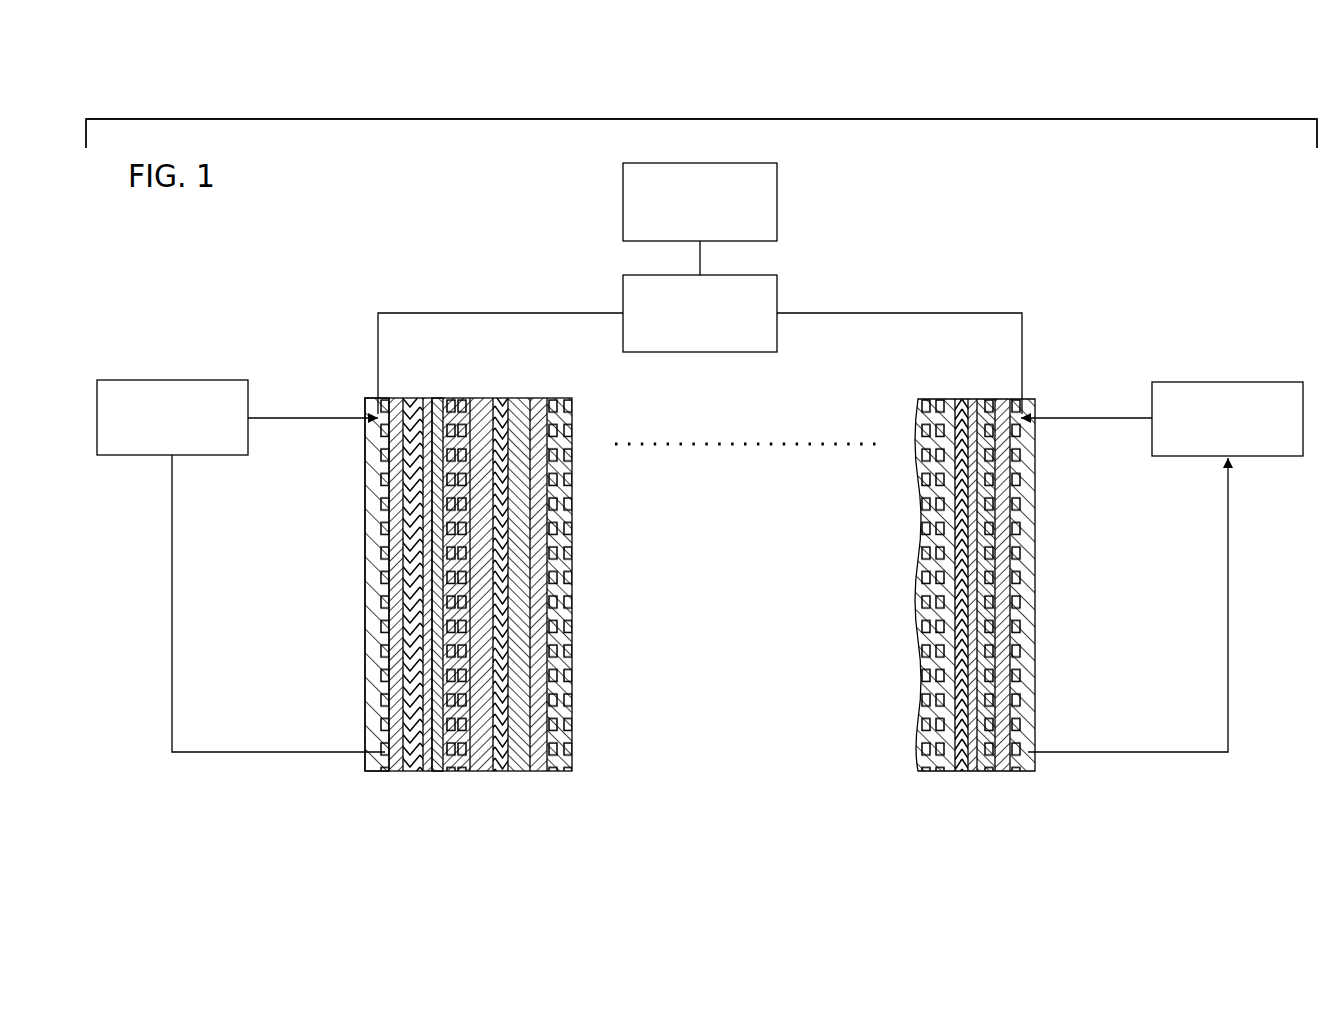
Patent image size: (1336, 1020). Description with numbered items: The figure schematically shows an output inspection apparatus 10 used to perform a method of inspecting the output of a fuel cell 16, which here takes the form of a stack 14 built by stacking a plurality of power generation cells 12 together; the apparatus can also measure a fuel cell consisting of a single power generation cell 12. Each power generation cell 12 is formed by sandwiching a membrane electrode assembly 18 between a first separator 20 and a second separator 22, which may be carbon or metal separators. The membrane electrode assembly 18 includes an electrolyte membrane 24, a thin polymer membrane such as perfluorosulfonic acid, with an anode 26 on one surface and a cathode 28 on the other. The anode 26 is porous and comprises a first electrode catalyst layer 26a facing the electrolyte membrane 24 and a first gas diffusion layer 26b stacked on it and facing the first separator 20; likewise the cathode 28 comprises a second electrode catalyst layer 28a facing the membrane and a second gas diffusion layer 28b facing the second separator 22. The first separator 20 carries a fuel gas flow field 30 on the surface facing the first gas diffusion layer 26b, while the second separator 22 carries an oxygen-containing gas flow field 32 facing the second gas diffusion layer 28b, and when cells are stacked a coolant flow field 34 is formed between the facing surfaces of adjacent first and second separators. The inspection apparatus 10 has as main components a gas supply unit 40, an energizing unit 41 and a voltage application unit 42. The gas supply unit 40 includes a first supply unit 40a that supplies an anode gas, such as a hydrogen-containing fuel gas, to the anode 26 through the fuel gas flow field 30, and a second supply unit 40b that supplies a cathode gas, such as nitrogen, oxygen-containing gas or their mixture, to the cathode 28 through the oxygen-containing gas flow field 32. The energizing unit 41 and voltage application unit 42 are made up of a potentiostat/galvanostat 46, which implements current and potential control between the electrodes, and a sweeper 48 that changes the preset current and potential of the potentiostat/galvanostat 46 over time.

The output inspection apparatus 10 is at (1144, 222).
The power generation cell 12 is at (236, 672).
The stack 14 is at (801, 421).
The fuel cell 16 is at (649, 601).
The membrane electrode assembly 18 is at (272, 500).
The first separator 20 is at (372, 485).
The second separator 22 is at (460, 665).
The electrolyte membrane 24 is at (421, 560).
The anode 26 is at (309, 493).
The first electrode catalyst layer 26a is at (412, 536).
The first gas diffusion layer 26b is at (393, 509).
The cathode 28 is at (309, 585).
The second electrode catalyst layer 28a is at (428, 603).
The second gas diffusion layer 28b is at (440, 623).
The fuel gas flow field 30 is at (376, 441).
The oxygen-containing gas flow field 32 is at (1015, 600).
The coolant flow field 34 is at (920, 648).
The gas supply unit 40 is at (700, 542).
The first supply unit 40a is at (213, 378).
The second supply unit 40b is at (1228, 379).
The energizing unit 41 is at (700, 287).
The voltage application unit 42 is at (806, 241).
The potentiostat/galvanostat 46 is at (623, 288).
The sweeper 48 is at (623, 176).